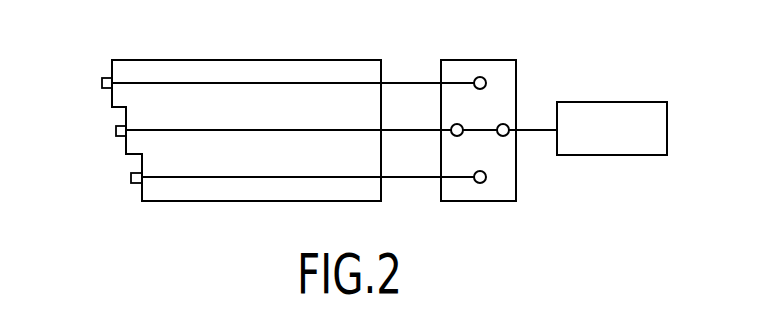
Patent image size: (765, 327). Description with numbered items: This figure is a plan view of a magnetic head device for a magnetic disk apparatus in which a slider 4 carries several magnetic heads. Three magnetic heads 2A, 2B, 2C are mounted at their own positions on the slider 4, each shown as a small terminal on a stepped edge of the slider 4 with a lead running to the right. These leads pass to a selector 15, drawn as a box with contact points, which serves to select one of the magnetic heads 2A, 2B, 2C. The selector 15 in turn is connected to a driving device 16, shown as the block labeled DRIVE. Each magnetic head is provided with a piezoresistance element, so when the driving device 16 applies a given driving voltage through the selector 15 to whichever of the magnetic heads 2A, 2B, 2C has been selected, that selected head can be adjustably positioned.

The magnetic head 2A is at (100, 83).
The magnetic head 2B is at (116, 131).
The magnetic head 2C is at (130, 178).
The slider 4 is at (336, 60).
The selector 15 is at (486, 59).
The driving device 16 is at (610, 102).